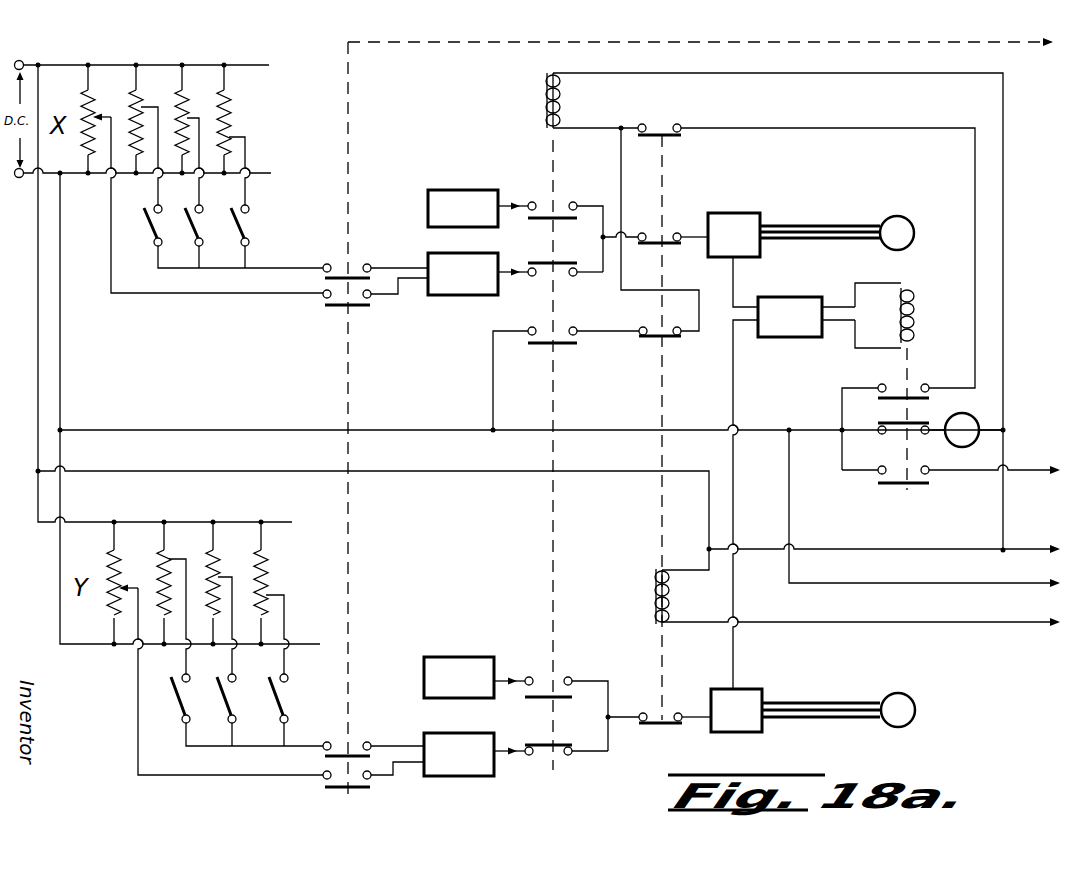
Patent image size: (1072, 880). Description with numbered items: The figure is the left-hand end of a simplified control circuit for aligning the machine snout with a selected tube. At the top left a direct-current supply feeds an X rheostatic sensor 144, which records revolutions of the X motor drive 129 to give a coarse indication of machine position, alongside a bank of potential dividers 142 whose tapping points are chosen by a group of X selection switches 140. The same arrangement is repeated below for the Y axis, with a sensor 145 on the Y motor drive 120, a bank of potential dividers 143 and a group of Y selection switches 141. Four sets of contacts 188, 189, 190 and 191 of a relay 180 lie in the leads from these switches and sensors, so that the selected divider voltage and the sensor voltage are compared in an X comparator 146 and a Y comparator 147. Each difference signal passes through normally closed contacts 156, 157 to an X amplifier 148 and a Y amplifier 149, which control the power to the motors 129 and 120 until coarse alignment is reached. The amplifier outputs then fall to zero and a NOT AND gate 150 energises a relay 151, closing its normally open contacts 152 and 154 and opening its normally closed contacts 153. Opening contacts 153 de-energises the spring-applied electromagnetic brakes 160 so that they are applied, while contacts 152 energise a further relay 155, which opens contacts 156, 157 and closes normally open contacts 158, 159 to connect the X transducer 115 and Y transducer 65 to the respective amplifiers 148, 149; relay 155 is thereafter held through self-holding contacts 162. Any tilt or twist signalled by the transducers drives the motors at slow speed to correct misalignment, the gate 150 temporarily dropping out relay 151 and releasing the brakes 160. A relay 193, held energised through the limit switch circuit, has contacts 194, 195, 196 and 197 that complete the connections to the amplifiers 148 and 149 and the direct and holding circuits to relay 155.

The rheostatic sensor 144 is at (84, 86).
The bank of potential dividers 142 is at (206, 56).
The X selection switches 140 is at (232, 252).
The relay contacts 188 is at (339, 263).
The relay contacts 189 is at (331, 311).
The X transducer 115 is at (457, 198).
The X comparator 146 is at (464, 286).
The normally open contacts 158 is at (556, 204).
The normally closed contacts 156 is at (559, 276).
The self-holding contacts 162 is at (559, 348).
The relay contacts 197 is at (668, 344).
The relay contacts 194 is at (668, 248).
The relay contacts 196 is at (666, 124).
The relay 155 is at (546, 106).
The X amplifier 148 is at (719, 246).
The X motor drive 129 is at (837, 224).
The NOT AND gate 150 is at (794, 493).
The relay 151 is at (916, 296).
The normally open contacts 152 is at (914, 386).
The normally closed contacts 153 is at (890, 422).
The normally open contacts 154 is at (902, 485).
The electromagnetic brakes 160 is at (958, 425).
The relay 193 is at (650, 608).
The sensor 145 is at (101, 555).
The bank of potential dividers 143 is at (220, 512).
The Y selection switches 141 is at (272, 722).
The relay contacts 190 is at (353, 743).
The relay contacts 191 is at (325, 791).
The Y transducer 65 is at (459, 668).
The Y comparator 147 is at (462, 768).
The normally open contacts 159 is at (556, 678).
The normally closed contacts 157 is at (559, 758).
The relay contacts 195 is at (667, 730).
The Y amplifier 149 is at (718, 698).
The Y motor drive 120 is at (838, 703).
The relay 180 is at (946, 51).